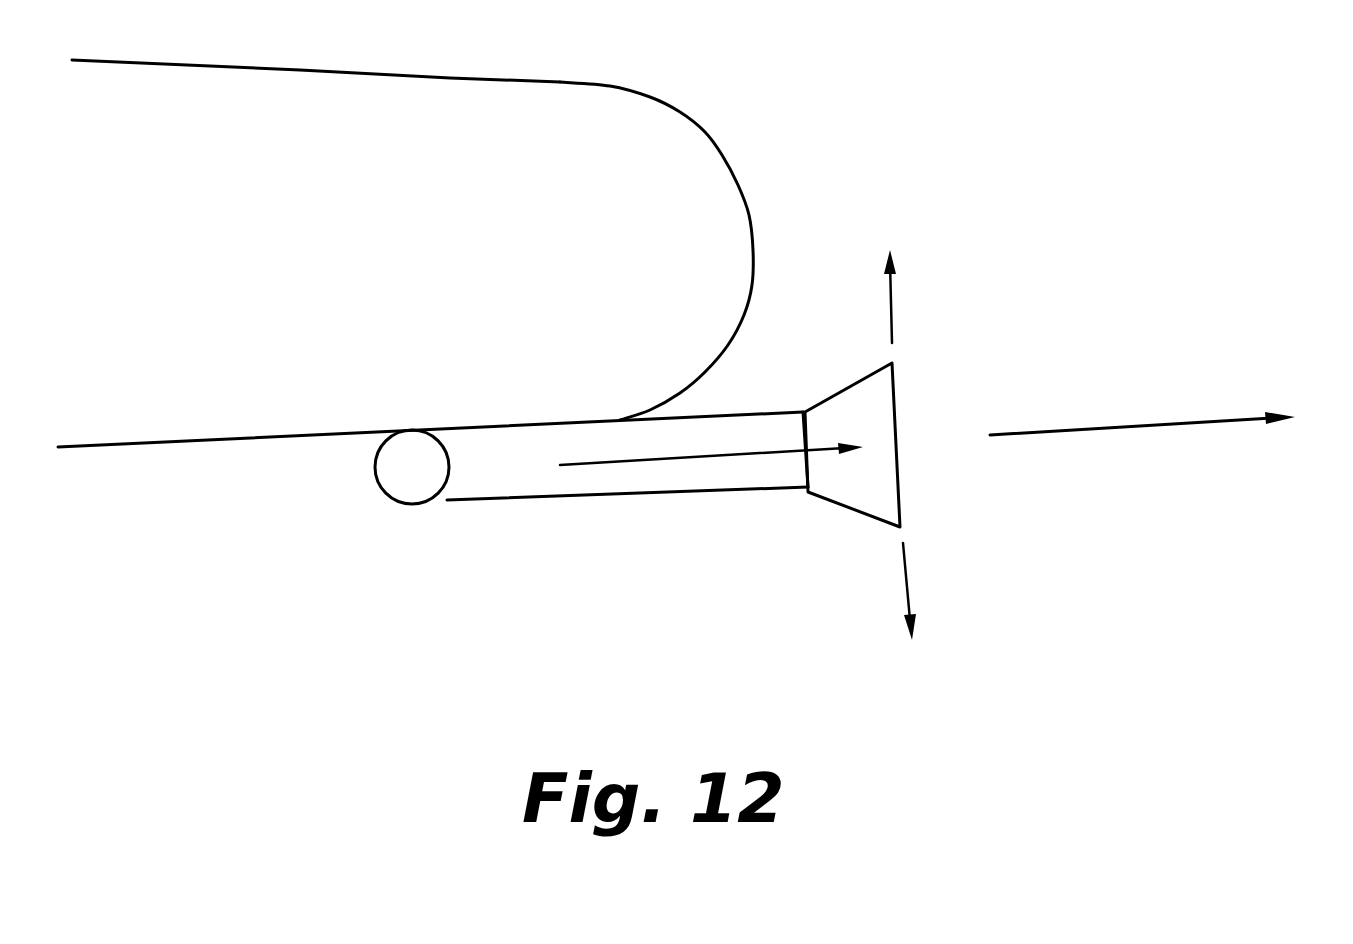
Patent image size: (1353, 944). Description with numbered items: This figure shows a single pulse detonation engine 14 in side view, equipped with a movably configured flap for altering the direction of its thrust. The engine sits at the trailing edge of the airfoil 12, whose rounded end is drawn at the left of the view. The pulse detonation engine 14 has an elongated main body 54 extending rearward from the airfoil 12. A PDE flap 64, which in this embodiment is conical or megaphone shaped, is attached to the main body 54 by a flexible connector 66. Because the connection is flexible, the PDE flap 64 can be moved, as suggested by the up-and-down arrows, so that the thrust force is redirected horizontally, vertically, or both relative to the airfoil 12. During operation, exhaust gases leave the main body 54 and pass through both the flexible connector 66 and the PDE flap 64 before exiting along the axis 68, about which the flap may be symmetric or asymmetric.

The airfoil 12 is at (690, 172).
The pulse detonation engine 14 is at (462, 525).
The main body 54 is at (497, 482).
The PDE flap 64 is at (880, 488).
The flexible connector 66 is at (807, 493).
The axis 68 is at (1171, 417).